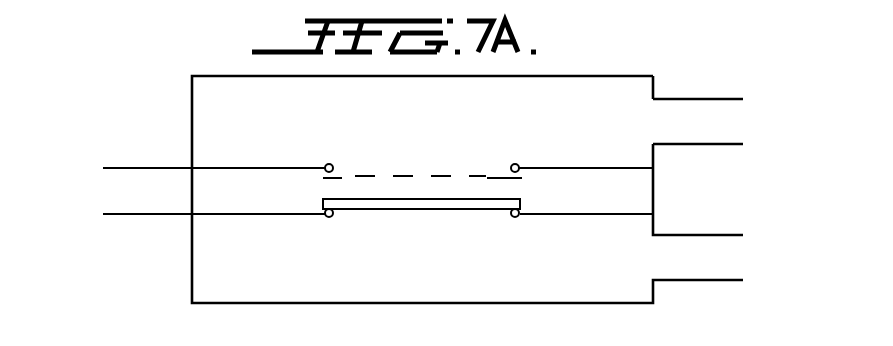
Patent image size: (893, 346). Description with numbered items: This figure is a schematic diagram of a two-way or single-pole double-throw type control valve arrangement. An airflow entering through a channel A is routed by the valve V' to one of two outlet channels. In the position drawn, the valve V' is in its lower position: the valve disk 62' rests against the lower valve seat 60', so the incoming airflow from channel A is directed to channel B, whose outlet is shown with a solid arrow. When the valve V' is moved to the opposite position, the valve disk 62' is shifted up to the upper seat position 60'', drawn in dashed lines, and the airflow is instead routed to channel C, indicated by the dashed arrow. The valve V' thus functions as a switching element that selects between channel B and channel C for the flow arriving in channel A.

The lower valve seat 60' is at (422, 244).
The upper valve seat 60'' is at (448, 149).
The valve disk 62' is at (421, 239).
The channel A is at (148, 191).
The channel B is at (697, 122).
The channel C is at (697, 258).
The valve V' is at (262, 258).